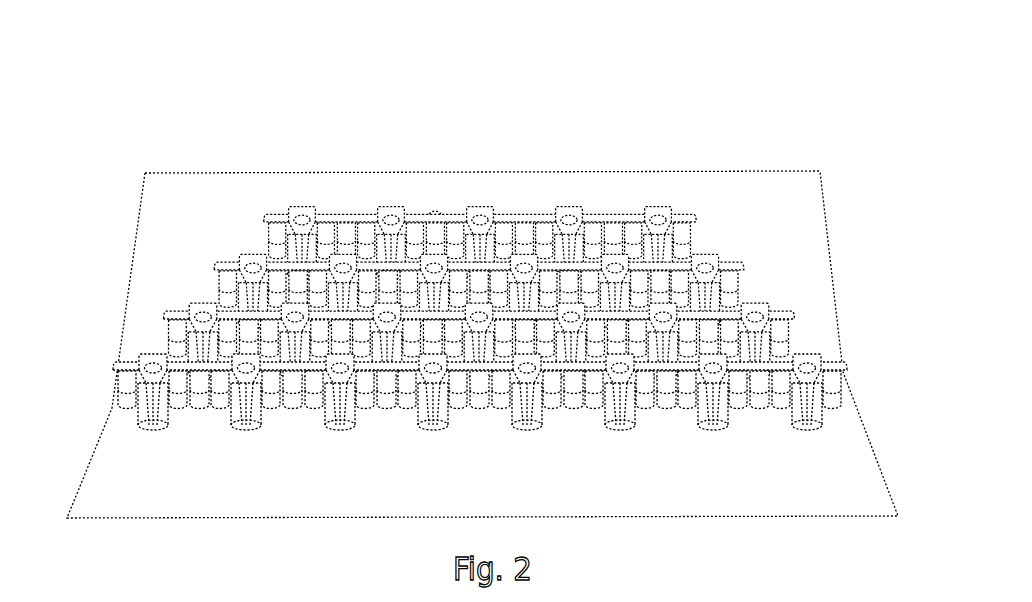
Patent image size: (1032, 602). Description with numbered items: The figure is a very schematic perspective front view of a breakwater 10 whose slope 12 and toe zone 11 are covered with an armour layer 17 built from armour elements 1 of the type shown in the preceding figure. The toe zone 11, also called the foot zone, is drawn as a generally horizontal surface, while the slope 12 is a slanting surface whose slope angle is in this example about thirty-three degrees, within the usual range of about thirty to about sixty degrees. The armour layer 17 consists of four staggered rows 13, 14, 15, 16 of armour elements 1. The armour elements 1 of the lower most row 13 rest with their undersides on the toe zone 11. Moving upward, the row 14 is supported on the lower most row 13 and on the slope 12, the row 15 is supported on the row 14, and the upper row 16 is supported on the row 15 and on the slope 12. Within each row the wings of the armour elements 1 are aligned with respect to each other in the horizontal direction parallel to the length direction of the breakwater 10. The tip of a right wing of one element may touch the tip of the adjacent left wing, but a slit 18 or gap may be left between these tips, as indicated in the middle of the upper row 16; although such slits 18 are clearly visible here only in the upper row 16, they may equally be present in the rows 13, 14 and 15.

The armour element 1 is at (380, 207).
The breakwater 10 is at (720, 102).
The toe zone 11 is at (847, 475).
The slope 12 is at (758, 187).
The lower most row 13 is at (90, 388).
The row 14 is at (138, 329).
The row 15 is at (187, 283).
The upper row 16 is at (225, 236).
The armour layer 17 is at (157, 208).
The slit 18 is at (443, 190).